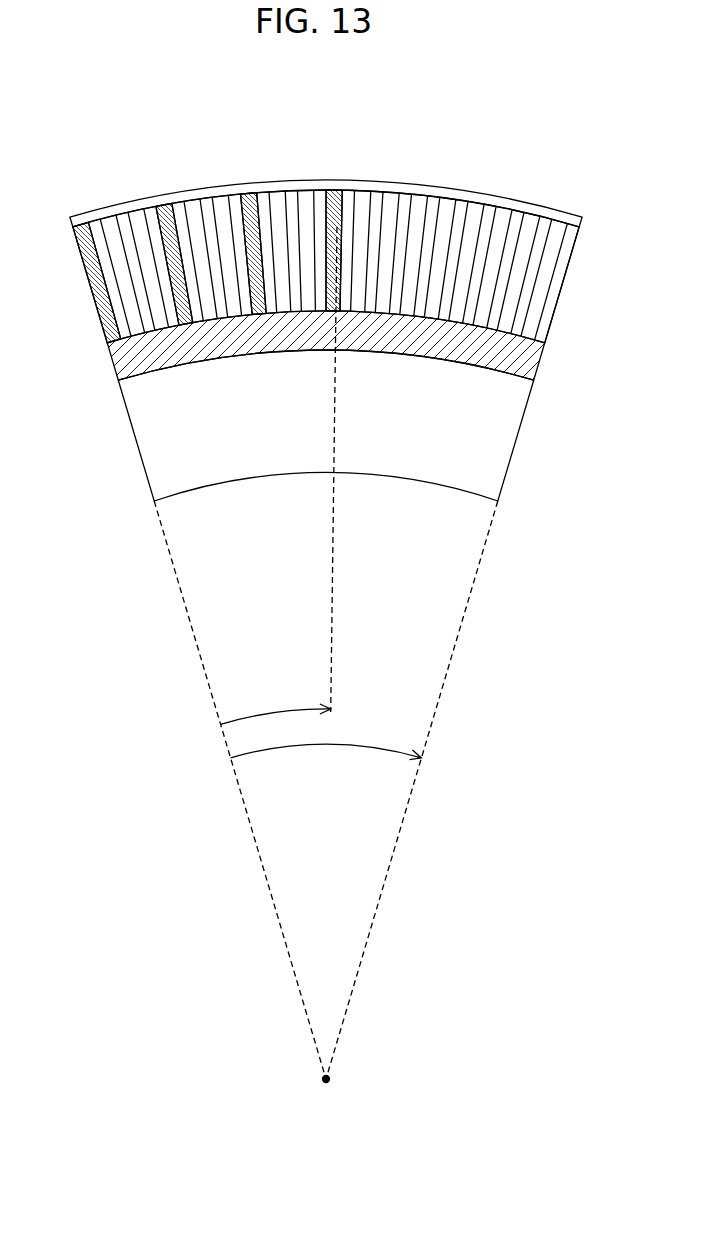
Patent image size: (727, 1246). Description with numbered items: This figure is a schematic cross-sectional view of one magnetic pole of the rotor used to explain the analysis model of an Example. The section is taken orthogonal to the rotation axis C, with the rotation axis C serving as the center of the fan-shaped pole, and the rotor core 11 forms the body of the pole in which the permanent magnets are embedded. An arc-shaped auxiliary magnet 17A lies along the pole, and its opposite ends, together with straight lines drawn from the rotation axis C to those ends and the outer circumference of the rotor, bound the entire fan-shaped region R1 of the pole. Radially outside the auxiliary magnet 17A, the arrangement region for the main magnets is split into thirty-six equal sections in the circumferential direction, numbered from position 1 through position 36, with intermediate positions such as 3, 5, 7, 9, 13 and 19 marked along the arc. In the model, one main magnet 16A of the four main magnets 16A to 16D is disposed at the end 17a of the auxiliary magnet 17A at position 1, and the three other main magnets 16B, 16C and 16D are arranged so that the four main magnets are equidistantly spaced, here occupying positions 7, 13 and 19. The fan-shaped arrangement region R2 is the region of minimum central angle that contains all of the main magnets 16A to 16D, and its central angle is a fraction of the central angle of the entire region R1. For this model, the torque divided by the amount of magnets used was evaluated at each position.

The main magnet 16A is at (86, 228).
The main magnet 16B is at (168, 215).
The main magnet 16C is at (249, 200).
The main magnet 16D is at (331, 193).
The position one 1 is at (90, 261).
The tooth number 3 is at (112, 251).
The tooth number 5 is at (140, 246).
The tooth number 7 is at (168, 237).
The tooth number 9 is at (195, 234).
The rotary shaft 13 is at (246, 222).
The tooth number 19 is at (329, 217).
The tooth number 36 is at (560, 282).
The auxiliary magnet 17A is at (128, 352).
The end of the auxiliary magnet 17a is at (118, 382).
The rotor core 11 is at (150, 430).
The entire region R1 is at (437, 638).
The arrangement region R2 is at (210, 598).
The rotation axis C is at (329, 1078).